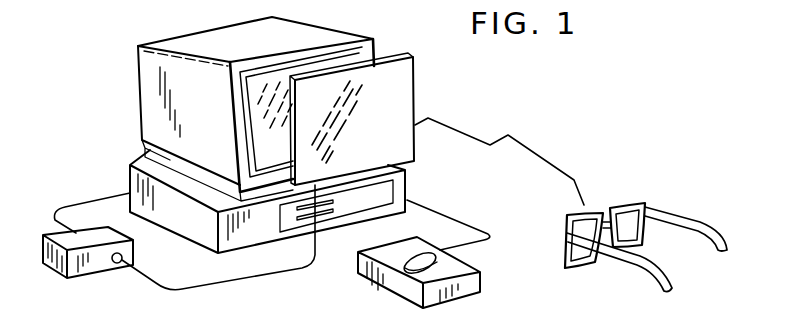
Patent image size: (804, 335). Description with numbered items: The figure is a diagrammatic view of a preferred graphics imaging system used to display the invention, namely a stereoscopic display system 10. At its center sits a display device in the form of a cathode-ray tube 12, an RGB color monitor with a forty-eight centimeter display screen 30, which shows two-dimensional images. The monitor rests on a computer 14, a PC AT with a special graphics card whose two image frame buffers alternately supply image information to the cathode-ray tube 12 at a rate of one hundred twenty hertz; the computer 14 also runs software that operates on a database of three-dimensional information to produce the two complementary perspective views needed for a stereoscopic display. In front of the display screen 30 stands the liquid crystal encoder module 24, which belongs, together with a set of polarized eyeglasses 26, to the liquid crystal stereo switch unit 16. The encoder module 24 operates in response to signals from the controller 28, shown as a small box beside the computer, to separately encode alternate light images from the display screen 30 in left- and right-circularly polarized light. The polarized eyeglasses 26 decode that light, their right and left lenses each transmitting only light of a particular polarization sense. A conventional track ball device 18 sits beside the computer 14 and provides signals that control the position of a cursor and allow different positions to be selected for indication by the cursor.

The stereoscopic display system 10 is at (597, 116).
The cathode-ray tube 12 is at (155, 89).
The computer 14 is at (402, 190).
The liquid crystal stereo switch unit 16 is at (499, 161).
The track ball device 18 is at (472, 286).
The liquid crystal encoder module 24 is at (397, 99).
The polarized eyeglasses 26 is at (637, 202).
The controller 28 is at (94, 262).
The display screen 30 is at (262, 120).